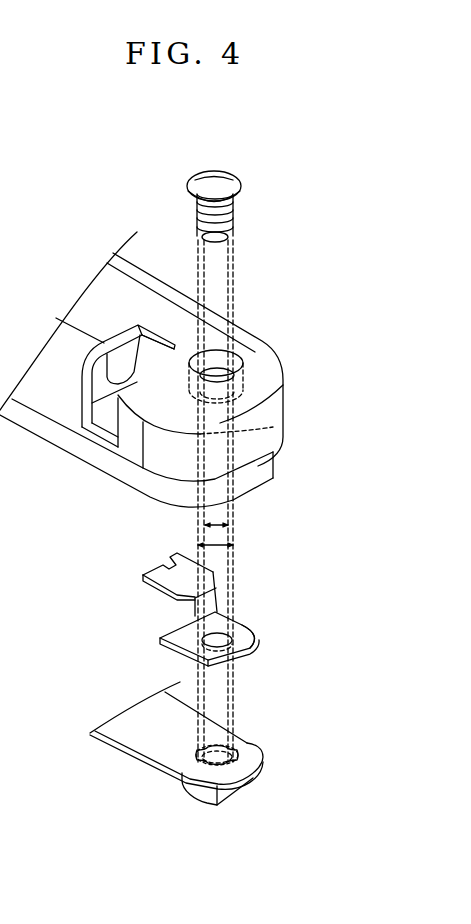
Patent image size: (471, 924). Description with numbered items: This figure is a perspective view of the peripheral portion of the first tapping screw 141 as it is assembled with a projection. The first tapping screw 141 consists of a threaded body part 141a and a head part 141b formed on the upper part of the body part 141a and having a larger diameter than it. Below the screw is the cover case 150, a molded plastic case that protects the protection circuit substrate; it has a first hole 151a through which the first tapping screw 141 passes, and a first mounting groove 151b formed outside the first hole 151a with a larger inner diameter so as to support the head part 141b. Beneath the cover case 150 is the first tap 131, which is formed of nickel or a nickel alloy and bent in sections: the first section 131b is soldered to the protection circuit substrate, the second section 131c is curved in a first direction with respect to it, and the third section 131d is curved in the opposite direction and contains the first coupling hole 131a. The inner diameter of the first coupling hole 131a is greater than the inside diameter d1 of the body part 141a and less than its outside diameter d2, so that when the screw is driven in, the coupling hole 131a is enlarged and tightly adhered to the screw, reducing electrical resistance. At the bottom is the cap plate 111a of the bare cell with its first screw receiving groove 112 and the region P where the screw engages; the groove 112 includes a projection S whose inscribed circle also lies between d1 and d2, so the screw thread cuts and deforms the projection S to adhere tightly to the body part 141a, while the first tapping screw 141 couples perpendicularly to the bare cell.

The first tapping screw 141 is at (264, 206).
The body part 141a is at (232, 218).
The head part 141b is at (240, 188).
The cover case 150 is at (272, 419).
The first hole 151a is at (245, 431).
The first mounting groove 151b is at (244, 363).
The first tap 131 is at (187, 609).
The first coupling hole 131a is at (232, 640).
The first section 131b is at (213, 582).
The second section 131c is at (207, 598).
The third section 131d is at (247, 650).
The cap plate 111a is at (157, 748).
The first screw receiving groove 112 is at (224, 749).
The projection S is at (245, 757).
The protrusion P is at (197, 790).
The inside diameter d1 is at (230, 525).
The outside diameter d2 is at (227, 545).